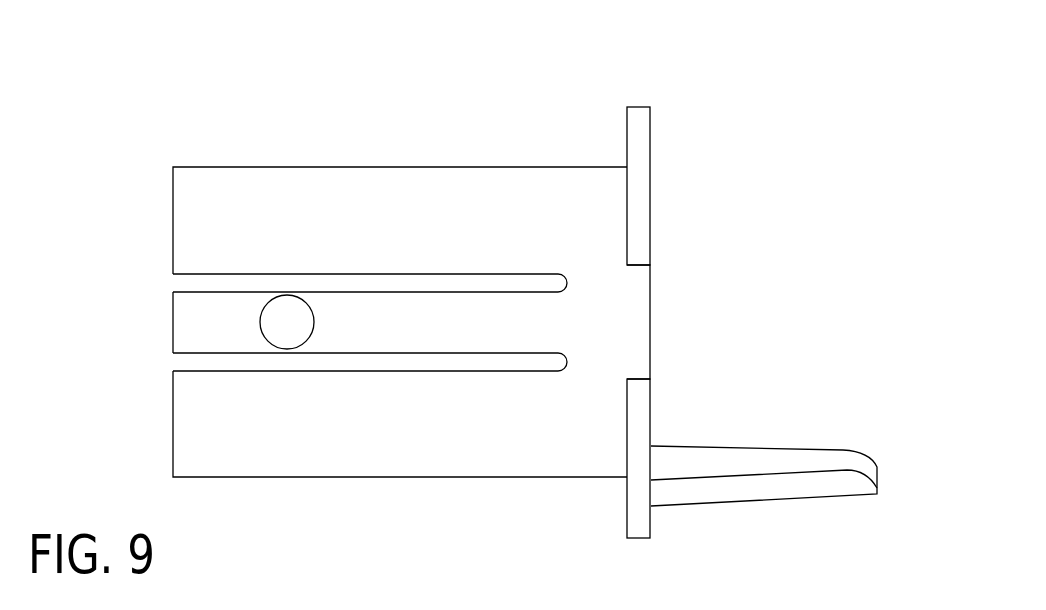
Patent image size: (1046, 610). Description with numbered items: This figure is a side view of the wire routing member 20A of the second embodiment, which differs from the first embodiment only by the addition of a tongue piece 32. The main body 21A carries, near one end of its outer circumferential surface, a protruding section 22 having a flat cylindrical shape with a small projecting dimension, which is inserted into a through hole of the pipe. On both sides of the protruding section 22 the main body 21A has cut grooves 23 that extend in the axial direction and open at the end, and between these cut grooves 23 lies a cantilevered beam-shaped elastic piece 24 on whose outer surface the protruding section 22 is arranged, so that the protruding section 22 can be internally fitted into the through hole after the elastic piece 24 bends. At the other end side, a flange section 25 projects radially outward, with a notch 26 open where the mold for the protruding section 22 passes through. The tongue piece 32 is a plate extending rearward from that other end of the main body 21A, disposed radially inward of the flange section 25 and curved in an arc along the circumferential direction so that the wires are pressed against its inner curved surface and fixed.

The wire routing member 20A is at (530, 166).
The main body 21A is at (513, 470).
The protruding section 22 is at (291, 310).
The cut groove 23 is at (188, 276).
The elastic piece 24 is at (180, 322).
The flange section 25 is at (640, 112).
The notch 26 is at (638, 267).
The tongue piece 32 is at (808, 490).